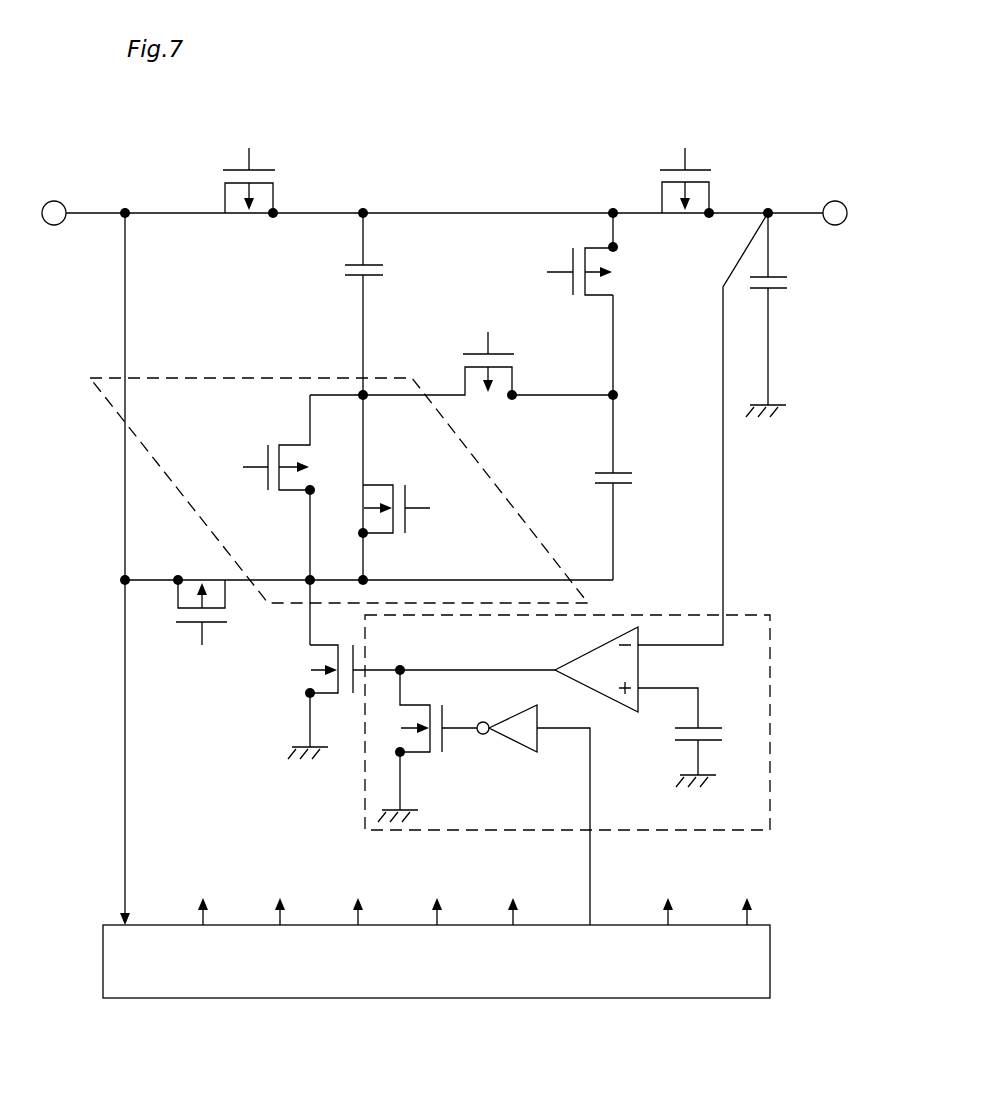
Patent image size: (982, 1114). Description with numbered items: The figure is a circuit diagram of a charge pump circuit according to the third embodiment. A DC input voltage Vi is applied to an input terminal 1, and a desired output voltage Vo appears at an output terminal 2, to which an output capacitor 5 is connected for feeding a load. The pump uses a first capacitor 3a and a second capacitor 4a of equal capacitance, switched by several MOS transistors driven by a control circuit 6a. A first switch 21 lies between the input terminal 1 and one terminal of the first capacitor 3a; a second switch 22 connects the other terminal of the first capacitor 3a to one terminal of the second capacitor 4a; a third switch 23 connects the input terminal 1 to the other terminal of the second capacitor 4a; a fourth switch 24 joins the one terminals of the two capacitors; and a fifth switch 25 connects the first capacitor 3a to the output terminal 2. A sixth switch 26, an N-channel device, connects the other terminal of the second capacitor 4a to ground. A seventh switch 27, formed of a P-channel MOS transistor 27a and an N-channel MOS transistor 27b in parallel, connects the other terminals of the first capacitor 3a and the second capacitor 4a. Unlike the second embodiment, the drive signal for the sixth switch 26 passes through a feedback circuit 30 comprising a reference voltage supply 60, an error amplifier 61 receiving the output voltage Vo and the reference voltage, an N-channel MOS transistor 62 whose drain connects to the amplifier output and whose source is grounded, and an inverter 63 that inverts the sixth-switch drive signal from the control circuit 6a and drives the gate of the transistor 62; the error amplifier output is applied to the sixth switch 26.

The input terminal 1 is at (54, 201).
The output terminal 2 is at (835, 201).
The first switch 21 is at (275, 195).
The second switch 22 is at (490, 403).
The third switch 23 is at (198, 580).
The fourth switch 24 is at (617, 277).
The fifth switch 25 is at (660, 178).
The sixth switch 26 is at (309, 676).
The seventh switch 27 is at (552, 557).
The P-channel MOS transistor 27a is at (266, 450).
The N-channel MOS transistor 27b is at (406, 522).
The first capacitor 3a is at (345, 270).
The second capacitor 4a is at (634, 478).
The output capacitor 5 is at (789, 280).
The feedback circuit 30 is at (772, 780).
The reference voltage supply 60 is at (716, 728).
The error amplifier 61 is at (585, 655).
The N-channel MOS transistor 62 is at (441, 756).
The inverter 63 is at (540, 753).
The control circuit 6a is at (103, 945).